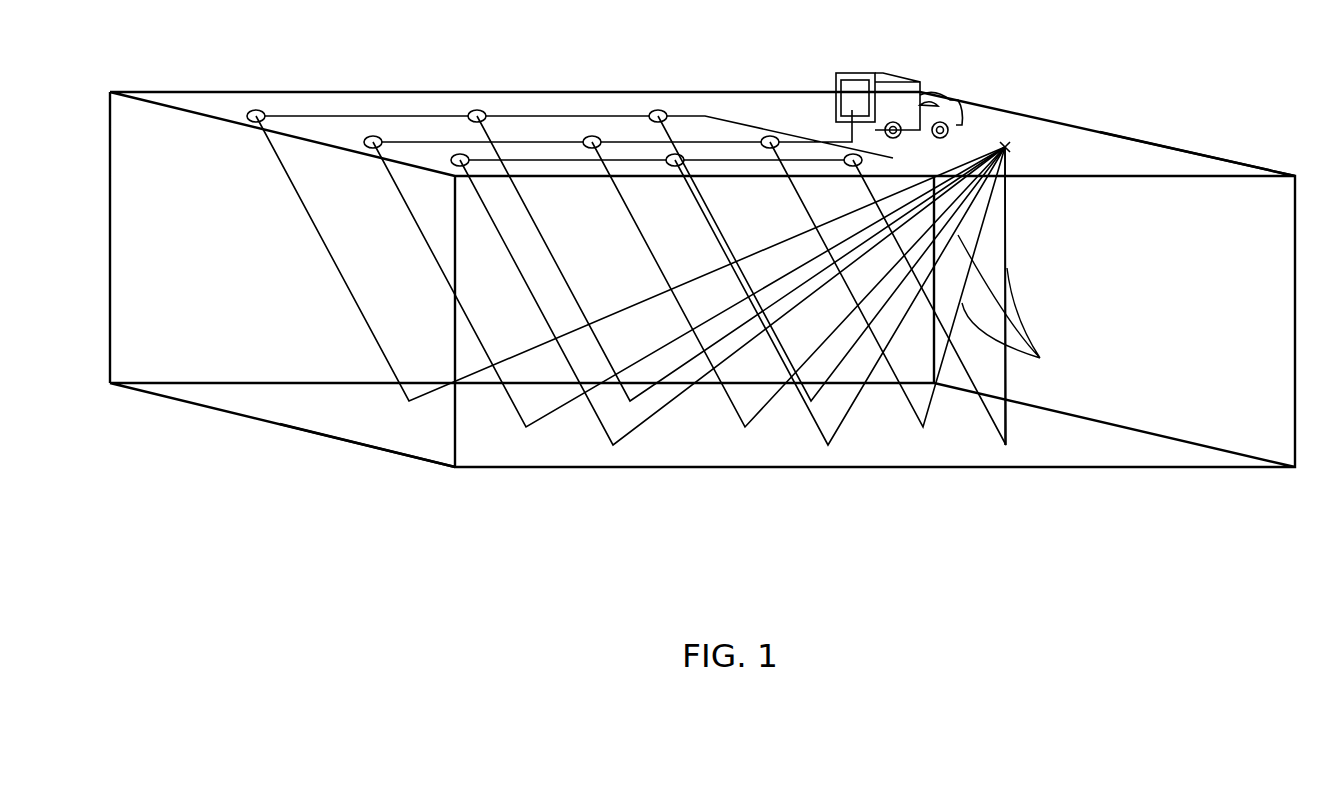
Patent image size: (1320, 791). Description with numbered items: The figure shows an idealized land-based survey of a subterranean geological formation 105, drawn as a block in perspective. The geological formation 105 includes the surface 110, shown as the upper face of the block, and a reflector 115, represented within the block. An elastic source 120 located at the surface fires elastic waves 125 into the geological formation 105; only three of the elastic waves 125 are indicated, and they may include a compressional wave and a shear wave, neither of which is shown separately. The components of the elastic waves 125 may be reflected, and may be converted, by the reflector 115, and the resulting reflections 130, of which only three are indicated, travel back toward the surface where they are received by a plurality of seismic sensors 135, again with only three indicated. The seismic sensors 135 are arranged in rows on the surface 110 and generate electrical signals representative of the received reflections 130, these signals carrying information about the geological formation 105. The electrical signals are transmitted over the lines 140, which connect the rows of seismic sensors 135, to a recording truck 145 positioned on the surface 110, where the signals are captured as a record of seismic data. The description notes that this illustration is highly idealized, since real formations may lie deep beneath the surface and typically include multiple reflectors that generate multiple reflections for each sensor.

The subterranean geological formation 105 is at (108, 263).
The surface 110 is at (1183, 160).
The reflector 115 is at (430, 440).
The elastic source 120 is at (1007, 145).
The elastic waves 125 is at (1024, 305).
The reflections 130 is at (436, 262).
The seismic sensors 135 is at (256, 108).
The lines 140 is at (567, 114).
The recording truck 145 is at (873, 62).